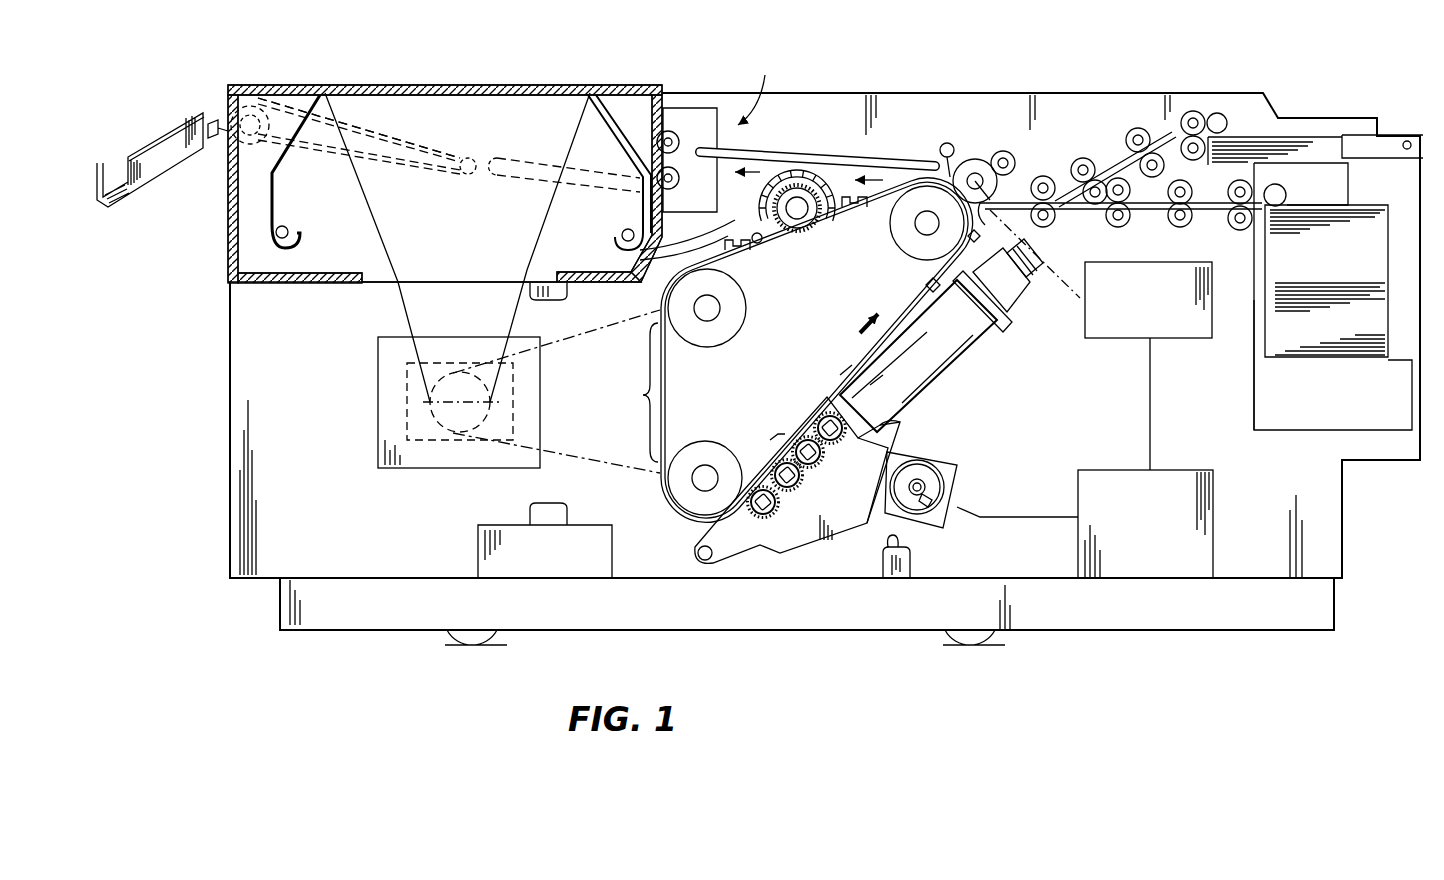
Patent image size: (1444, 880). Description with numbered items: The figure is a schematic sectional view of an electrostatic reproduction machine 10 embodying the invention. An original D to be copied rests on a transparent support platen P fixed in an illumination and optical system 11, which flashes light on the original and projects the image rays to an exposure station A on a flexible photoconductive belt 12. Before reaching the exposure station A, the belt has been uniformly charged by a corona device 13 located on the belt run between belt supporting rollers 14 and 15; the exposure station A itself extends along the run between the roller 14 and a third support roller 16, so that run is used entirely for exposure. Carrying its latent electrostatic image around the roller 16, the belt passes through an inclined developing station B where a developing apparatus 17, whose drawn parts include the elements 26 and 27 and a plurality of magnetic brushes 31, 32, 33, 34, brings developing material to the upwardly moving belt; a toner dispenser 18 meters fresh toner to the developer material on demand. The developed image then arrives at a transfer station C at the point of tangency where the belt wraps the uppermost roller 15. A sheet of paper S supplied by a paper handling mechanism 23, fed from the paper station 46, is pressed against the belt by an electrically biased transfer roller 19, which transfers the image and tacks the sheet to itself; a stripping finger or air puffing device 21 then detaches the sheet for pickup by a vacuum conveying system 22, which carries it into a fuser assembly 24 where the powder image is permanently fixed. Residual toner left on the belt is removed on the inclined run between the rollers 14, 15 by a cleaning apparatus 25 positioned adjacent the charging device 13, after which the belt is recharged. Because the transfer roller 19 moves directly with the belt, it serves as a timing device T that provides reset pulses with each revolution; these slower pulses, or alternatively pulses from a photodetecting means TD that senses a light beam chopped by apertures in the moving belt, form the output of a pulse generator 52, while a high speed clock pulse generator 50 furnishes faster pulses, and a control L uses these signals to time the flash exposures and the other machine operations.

The electrophotographic copying machine 10 is at (200, 240).
The illumination assembly / optical system 11 is at (386, 410).
The flexible photoconductive belt 12 is at (675, 392).
The corona device 13 is at (745, 228).
The belt supporting roller 14 is at (745, 300).
The belt supporting roller 15 is at (905, 248).
The third support roller 16 is at (717, 455).
The developing apparatus 17 is at (942, 400).
The toner dispenser 18 is at (965, 360).
The transfer roller 19 is at (975, 160).
The stripping finger or air puffing device 21 is at (940, 148).
The vacuum conveying system 22 is at (790, 158).
The paper handling mechanism 23 is at (1206, 110).
The fuser assembly 24 is at (768, 71).
The cleaning apparatus 25 is at (848, 175).
The developer housing wall 26 is at (900, 422).
The developer housing 27 is at (845, 528).
The magnetic brush roller 31 is at (779, 505).
The magnetic brush roller 32 is at (803, 478).
The magnetic brush roller 33 is at (824, 456).
The magnetic brush roller 34 is at (847, 433).
The paper station 46 is at (1315, 137).
The high speed clock pulse generator 50 is at (937, 523).
The pulse generator 52 is at (1178, 362).
The original D is at (432, 83).
The transparent support platen P is at (507, 98).
The exposure station A is at (634, 407).
The developing station B is at (766, 441).
The transfer station C is at (985, 210).
The sheet of paper S is at (1020, 212).
The timing device T is at (1178, 263).
The control L is at (1185, 470).
The photodetecting means TD is at (926, 287).